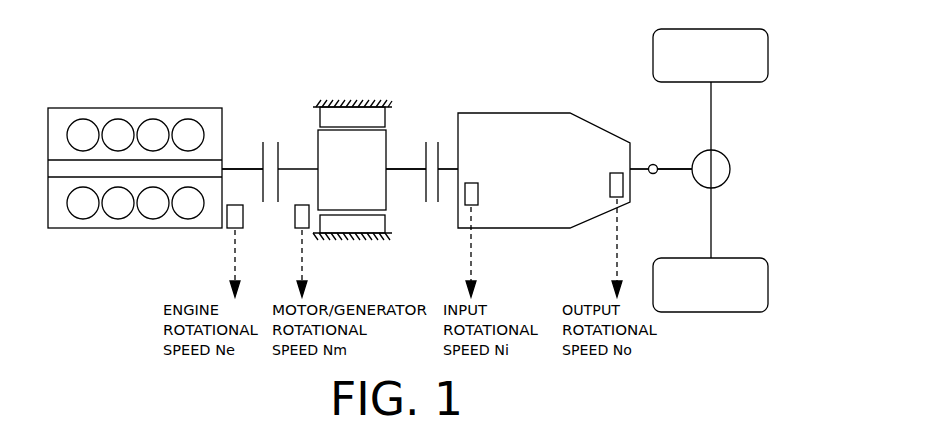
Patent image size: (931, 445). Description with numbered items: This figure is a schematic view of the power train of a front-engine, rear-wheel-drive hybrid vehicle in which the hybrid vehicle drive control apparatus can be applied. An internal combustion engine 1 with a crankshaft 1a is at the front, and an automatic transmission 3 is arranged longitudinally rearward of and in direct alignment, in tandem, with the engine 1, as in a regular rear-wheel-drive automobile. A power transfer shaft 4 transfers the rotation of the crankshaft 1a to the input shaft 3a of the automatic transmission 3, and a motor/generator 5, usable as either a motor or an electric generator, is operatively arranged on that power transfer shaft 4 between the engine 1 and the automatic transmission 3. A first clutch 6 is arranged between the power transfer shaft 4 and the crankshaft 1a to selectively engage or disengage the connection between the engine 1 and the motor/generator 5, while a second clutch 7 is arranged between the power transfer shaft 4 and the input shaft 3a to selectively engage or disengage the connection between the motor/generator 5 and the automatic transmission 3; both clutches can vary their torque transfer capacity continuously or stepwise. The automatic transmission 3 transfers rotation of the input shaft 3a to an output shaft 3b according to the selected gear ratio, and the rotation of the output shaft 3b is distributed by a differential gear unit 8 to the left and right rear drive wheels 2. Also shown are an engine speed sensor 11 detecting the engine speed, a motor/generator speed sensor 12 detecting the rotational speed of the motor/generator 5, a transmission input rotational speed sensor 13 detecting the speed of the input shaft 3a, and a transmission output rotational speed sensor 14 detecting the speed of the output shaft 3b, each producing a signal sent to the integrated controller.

The internal combustion engine 1 is at (109, 104).
The crankshaft 1a is at (241, 168).
The rear drive wheels 2 is at (653, 38).
The automatic transmission 3 is at (530, 111).
The input shaft 3a is at (447, 169).
The output shaft 3b is at (640, 169).
The power transfer shaft 4 is at (403, 169).
The motor/generator 5 is at (335, 100).
The first clutch 6 is at (268, 137).
The second clutch 7 is at (430, 210).
The differential gear unit 8 is at (731, 170).
The engine speed sensor 11 is at (232, 229).
The motor/generator speed sensor 12 is at (297, 229).
The transmission input rotational speed sensor 13 is at (478, 205).
The transmission output rotational speed sensor 14 is at (610, 198).